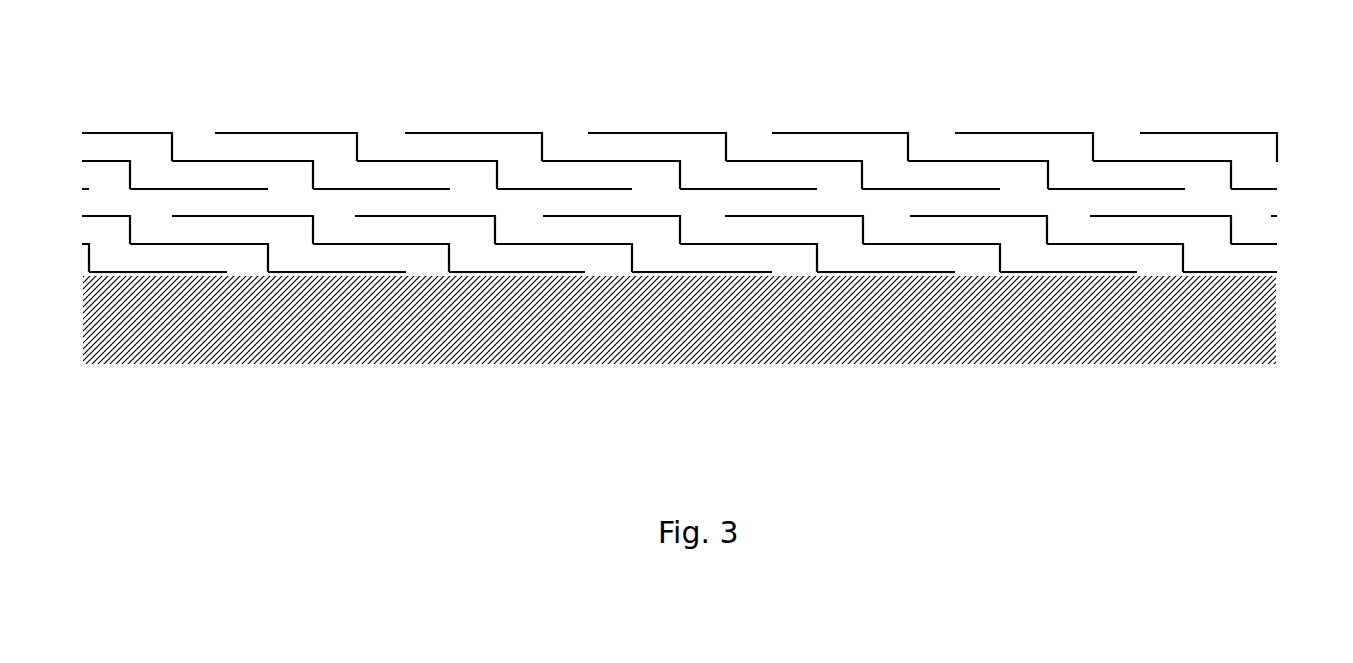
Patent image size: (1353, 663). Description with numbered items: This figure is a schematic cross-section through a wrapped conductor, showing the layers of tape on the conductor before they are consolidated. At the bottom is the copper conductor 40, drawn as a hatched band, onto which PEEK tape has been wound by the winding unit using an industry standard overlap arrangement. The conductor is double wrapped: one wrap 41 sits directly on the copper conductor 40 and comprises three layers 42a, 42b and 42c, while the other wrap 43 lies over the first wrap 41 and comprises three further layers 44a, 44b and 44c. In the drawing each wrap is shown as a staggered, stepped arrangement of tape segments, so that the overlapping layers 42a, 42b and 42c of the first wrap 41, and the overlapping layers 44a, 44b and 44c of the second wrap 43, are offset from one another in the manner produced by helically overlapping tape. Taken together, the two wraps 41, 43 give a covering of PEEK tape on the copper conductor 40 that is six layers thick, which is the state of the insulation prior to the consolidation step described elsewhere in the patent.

The copper conductor 40 is at (411, 380).
The wrap 41 is at (713, 339).
The layer 42a is at (558, 271).
The layer 42b is at (355, 262).
The layer 42c is at (229, 225).
The wrap 43 is at (713, 111).
The layer 44a is at (733, 178).
The layer 44b is at (608, 150).
The layer 44c is at (463, 132).